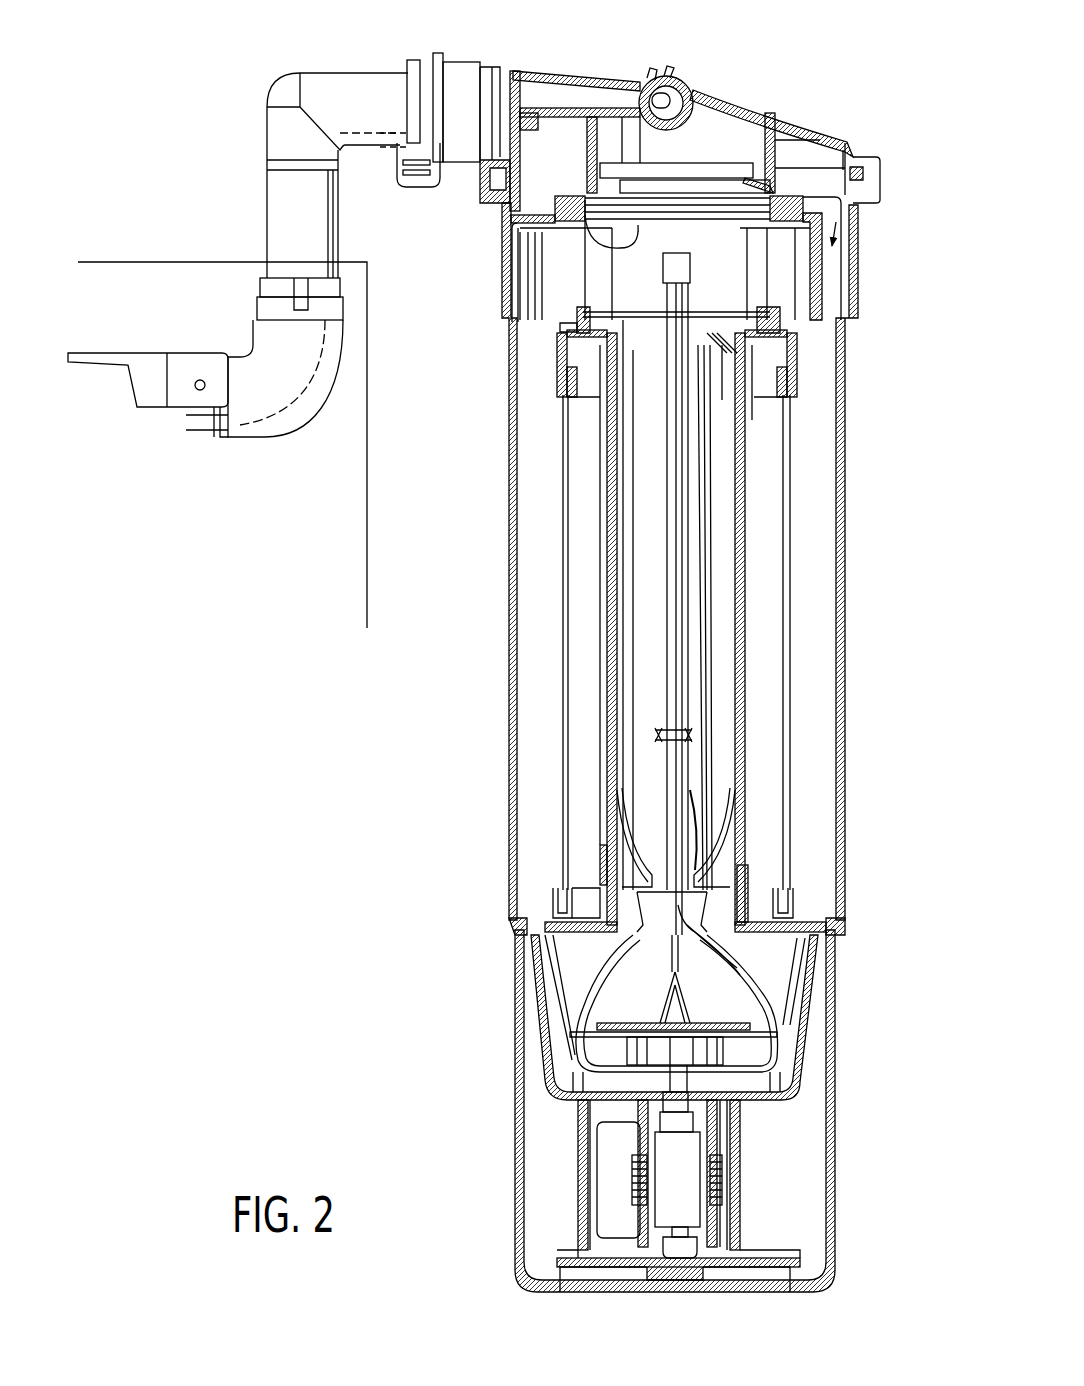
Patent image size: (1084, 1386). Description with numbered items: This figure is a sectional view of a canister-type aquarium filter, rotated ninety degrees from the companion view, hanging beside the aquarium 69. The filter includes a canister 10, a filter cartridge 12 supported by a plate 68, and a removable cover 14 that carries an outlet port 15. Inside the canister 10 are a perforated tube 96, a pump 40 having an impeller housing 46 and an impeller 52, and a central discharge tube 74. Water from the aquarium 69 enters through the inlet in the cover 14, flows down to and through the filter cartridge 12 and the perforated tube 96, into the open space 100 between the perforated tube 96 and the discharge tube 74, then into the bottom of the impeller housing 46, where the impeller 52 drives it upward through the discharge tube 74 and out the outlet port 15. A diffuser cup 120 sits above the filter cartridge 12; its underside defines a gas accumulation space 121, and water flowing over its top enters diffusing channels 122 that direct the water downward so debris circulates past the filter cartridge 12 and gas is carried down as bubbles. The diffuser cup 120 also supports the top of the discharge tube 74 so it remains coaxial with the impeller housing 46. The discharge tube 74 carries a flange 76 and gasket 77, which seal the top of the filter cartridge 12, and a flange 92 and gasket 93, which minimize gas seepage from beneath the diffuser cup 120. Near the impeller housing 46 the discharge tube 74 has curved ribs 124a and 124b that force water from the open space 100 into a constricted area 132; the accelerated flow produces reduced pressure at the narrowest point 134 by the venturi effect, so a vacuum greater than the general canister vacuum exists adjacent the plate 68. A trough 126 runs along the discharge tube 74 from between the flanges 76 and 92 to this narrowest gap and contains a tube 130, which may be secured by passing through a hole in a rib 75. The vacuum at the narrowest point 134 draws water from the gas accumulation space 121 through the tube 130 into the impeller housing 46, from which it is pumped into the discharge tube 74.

The canister 10 is at (508, 520).
The filter cartridge 12 is at (563, 590).
The removable cover 14 is at (748, 106).
The outlet port 15 is at (472, 60).
The pump 40 is at (783, 1055).
The impeller housing 46 is at (587, 985).
The impeller 52 is at (630, 1053).
The plate 68 is at (748, 903).
The aquarium 69 is at (368, 401).
The discharge tube 74 is at (708, 514).
The rib 75 is at (680, 732).
The flange 76 is at (640, 310).
The gasket 77 is at (760, 310).
The flange 92 is at (637, 225).
The gasket 93 is at (773, 188).
The perforated tube 96 is at (613, 668).
The open space 100 is at (625, 718).
The diffuser cup 120 is at (823, 273).
The gas accumulation space 121 is at (545, 298).
The diffusing channels 122 is at (877, 190).
The curved rib 124a is at (650, 857).
The curved rib 124b is at (707, 860).
The trough 126 is at (673, 455).
The tube 130 is at (675, 598).
The constricted area 132 is at (690, 815).
The narrowest point 134 is at (783, 942).